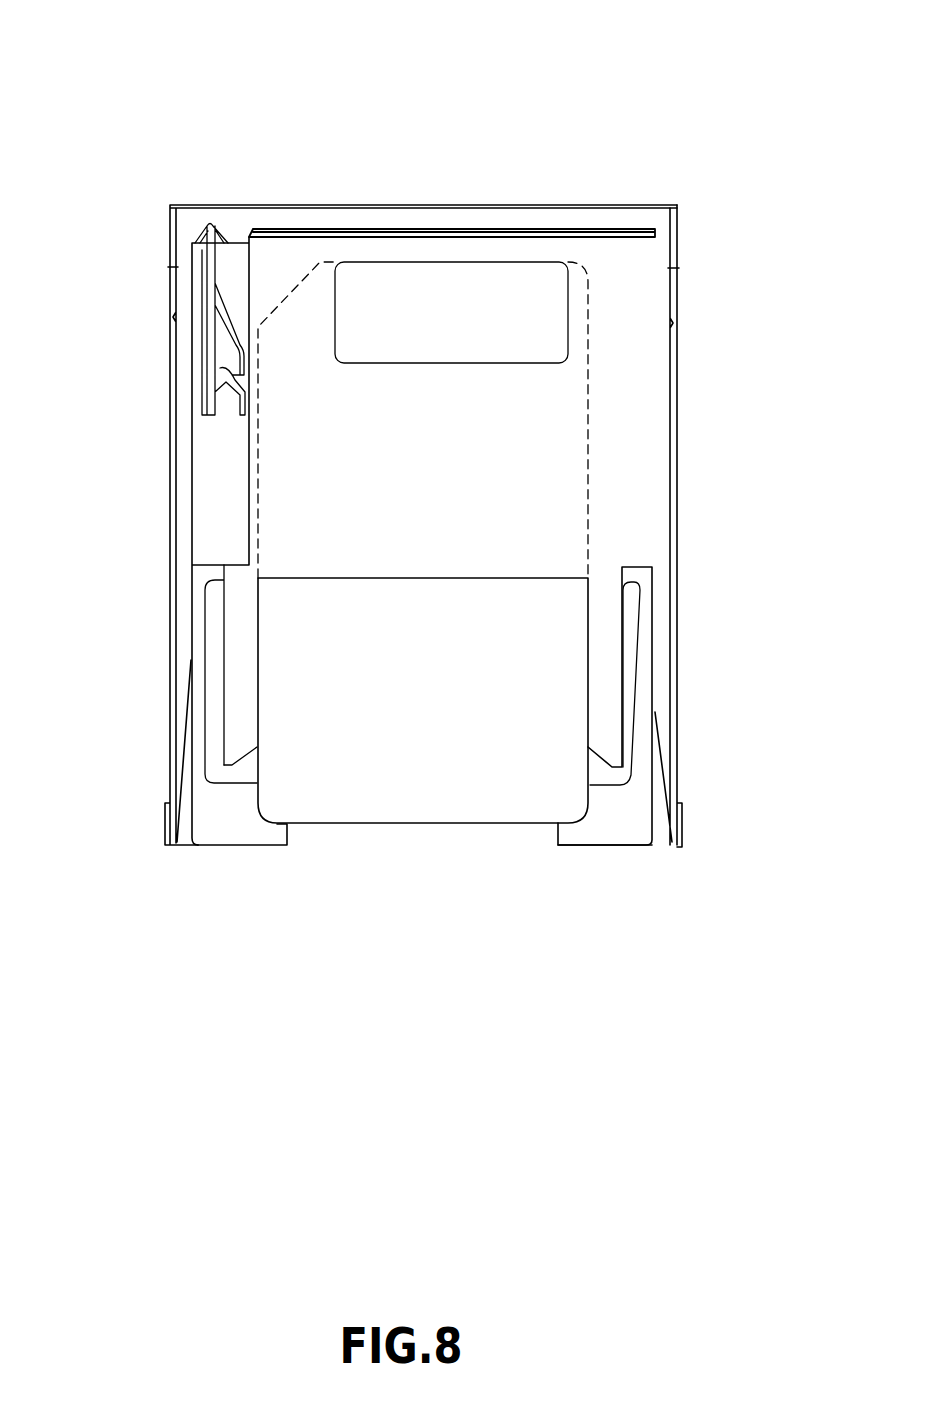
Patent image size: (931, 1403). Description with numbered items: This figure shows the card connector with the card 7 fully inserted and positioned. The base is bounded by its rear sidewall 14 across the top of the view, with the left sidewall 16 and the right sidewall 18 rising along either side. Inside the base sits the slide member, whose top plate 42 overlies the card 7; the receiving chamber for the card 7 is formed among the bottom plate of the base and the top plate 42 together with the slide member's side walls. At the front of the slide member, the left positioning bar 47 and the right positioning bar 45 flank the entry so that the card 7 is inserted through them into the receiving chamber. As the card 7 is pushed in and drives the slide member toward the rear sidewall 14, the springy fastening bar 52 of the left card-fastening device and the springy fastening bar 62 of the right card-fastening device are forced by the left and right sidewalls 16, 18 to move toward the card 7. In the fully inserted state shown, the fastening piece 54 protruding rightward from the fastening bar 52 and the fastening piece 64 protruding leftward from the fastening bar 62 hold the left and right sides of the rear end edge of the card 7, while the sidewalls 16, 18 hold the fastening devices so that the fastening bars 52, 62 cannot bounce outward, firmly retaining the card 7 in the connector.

The card 7 is at (433, 668).
The rear sidewall 14 is at (510, 218).
The left sidewall 16 is at (183, 625).
The right sidewall 18 is at (665, 648).
The top plate 42 is at (278, 285).
The right positioning bar 45 is at (608, 713).
The left positioning bar 47 is at (245, 697).
The fastening bar 52 is at (203, 682).
The fastening piece 54 is at (273, 832).
The fastening bar 62 is at (647, 715).
The fastening piece 64 is at (577, 835).